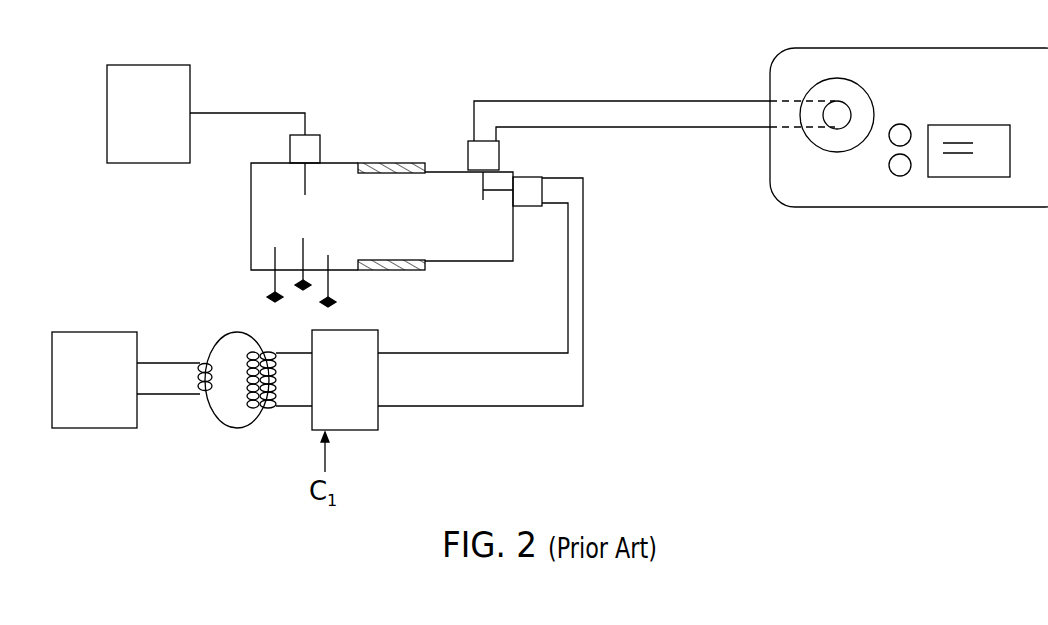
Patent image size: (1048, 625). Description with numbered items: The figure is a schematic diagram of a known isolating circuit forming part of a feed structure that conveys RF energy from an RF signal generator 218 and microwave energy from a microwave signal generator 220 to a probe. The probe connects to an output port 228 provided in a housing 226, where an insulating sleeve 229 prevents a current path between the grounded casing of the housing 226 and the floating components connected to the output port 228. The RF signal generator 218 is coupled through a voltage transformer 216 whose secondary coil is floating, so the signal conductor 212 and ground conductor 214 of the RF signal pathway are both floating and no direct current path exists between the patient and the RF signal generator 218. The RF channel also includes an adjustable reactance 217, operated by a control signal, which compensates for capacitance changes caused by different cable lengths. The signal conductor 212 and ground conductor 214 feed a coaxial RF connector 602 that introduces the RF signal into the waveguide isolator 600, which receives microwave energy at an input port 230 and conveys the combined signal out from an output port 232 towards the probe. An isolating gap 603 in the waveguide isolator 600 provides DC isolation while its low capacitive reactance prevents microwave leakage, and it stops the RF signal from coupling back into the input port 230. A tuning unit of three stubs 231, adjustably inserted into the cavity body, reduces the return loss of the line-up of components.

The signal conductor 212 is at (432, 354).
The ground conductor 214 is at (515, 407).
The voltage transformer 216 is at (237, 429).
The adjustable reactance 217 is at (360, 431).
The RF signal generator 218 is at (95, 429).
The microwave signal generator 220 is at (148, 165).
The housing 226 is at (983, 48).
The output port 228 is at (838, 78).
The insulating sleeve 229 is at (837, 130).
The input port 230 is at (308, 134).
The stubs 231 is at (268, 287).
The output port 232 is at (467, 158).
The waveguide isolator 600 is at (251, 230).
The coaxial RF connector 602 is at (528, 190).
The isolating gap 603 is at (400, 271).